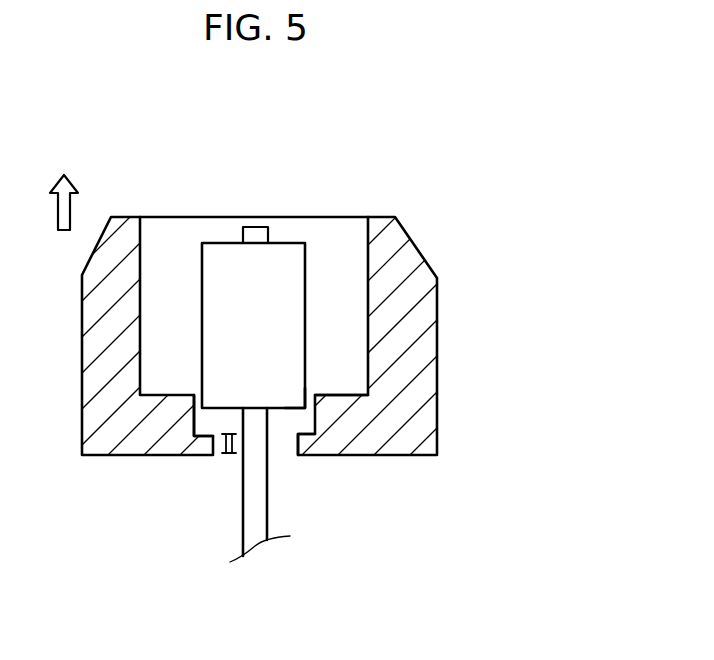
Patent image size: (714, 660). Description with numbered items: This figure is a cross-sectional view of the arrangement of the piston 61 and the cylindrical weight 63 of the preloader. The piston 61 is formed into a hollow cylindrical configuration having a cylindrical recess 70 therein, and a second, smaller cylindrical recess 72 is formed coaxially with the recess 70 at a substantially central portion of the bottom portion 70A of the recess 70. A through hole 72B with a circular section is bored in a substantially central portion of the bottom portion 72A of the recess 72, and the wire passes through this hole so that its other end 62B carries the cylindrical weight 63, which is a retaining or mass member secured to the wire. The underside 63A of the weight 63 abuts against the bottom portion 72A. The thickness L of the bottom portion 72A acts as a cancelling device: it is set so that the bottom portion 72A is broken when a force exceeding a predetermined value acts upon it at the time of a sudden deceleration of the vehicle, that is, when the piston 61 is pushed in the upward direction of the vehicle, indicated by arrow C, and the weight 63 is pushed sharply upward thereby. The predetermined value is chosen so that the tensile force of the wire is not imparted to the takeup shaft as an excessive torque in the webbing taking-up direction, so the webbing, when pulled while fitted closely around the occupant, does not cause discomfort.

The piston 61 is at (342, 294).
The cylindrical recess 70 is at (370, 257).
The bottom portion of the recess 70A is at (338, 394).
The cylindrical weight 63 is at (205, 258).
The underside of the weight 63A is at (291, 413).
The other end of the wire 62B is at (268, 490).
The cylindrical recess 72 is at (203, 430).
The bottom portion of the recess 72A is at (227, 440).
The through hole 72B is at (293, 445).
The thickness of the bottom portion L is at (237, 448).
The arrow direction C is at (70, 212).